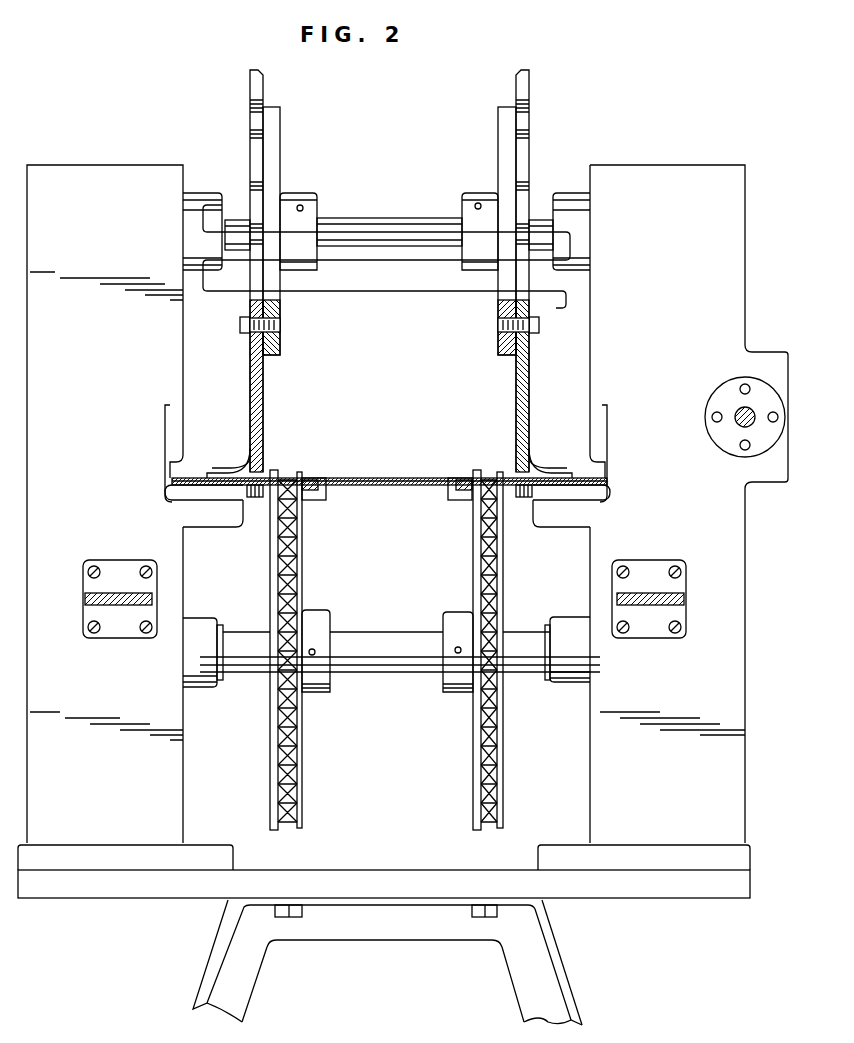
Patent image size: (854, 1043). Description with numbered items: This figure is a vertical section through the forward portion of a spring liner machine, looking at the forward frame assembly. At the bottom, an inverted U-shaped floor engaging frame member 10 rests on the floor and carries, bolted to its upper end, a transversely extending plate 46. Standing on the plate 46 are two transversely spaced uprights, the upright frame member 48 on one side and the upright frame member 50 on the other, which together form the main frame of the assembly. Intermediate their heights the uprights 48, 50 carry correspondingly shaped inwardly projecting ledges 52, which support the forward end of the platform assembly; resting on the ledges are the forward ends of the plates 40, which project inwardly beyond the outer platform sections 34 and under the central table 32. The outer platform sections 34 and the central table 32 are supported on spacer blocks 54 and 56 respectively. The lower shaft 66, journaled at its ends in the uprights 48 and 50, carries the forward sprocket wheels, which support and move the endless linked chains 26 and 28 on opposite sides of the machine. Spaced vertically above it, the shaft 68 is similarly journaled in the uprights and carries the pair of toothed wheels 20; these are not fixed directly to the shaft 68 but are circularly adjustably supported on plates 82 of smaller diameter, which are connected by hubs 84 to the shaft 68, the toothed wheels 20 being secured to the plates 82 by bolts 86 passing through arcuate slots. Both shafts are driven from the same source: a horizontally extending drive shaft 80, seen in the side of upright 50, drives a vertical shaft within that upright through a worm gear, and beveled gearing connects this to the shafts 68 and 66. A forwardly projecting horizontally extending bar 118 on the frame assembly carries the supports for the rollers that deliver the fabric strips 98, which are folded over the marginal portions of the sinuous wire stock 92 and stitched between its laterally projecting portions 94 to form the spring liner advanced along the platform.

The floor engaging frame member 10 is at (212, 981).
The toothed wheels 20 is at (255, 106).
The endless linked chain 26 is at (478, 783).
The endless linked chain 28 is at (275, 757).
The central platform section or table 32 is at (395, 486).
The outer platform or table sections 34 is at (188, 472).
The plates 40 is at (318, 500).
The transversely extending plate 46 is at (180, 890).
The upright frame member 48 is at (128, 185).
The upright frame member 50 is at (692, 175).
The ledges 52 is at (232, 512).
The spacer blocks 54 is at (180, 489).
The spacer blocks 56 is at (322, 488).
The shaft 66 is at (407, 637).
The shaft 68 is at (405, 222).
The drive shaft 80 is at (735, 415).
The plates 82 is at (276, 156).
The hubs 84 is at (305, 196).
The bolts 86 is at (240, 326).
The wire stock 92 is at (452, 477).
The laterally projecting portions 94 is at (395, 292).
The strips of fabric 98 is at (242, 462).
The horizontally extending bar 118 is at (95, 595).